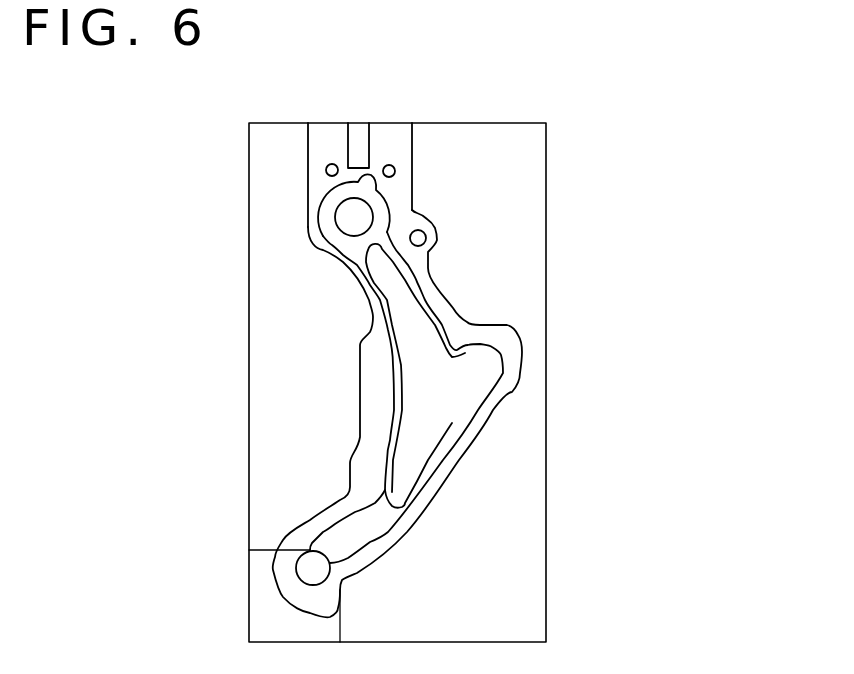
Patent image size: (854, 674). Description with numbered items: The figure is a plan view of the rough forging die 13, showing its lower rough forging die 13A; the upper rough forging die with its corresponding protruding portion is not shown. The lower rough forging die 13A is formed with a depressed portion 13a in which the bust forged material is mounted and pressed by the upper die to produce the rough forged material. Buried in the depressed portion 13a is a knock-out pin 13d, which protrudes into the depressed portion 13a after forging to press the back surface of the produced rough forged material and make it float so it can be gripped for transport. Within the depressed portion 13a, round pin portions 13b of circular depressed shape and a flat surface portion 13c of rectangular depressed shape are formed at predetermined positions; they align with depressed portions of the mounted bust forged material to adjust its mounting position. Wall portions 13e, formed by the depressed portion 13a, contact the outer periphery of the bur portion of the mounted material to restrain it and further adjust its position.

The rough forging die 13 is at (517, 395).
The lower rough forging die 13A is at (583, 410).
The depressed portion 13a is at (417, 435).
The round pin portions 13b is at (390, 165).
The flat surface portion 13c is at (357, 130).
The knock-out pin 13d is at (426, 238).
The wall portions 13e is at (308, 152).